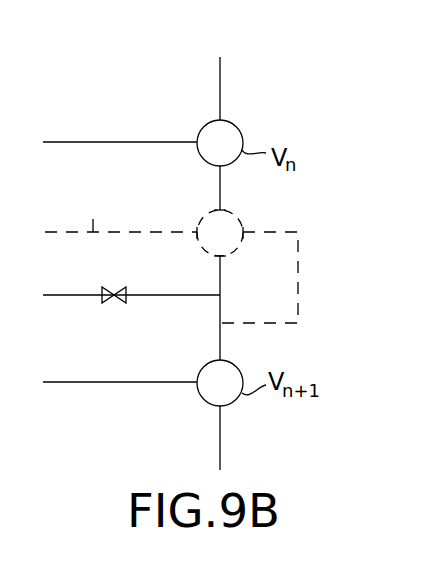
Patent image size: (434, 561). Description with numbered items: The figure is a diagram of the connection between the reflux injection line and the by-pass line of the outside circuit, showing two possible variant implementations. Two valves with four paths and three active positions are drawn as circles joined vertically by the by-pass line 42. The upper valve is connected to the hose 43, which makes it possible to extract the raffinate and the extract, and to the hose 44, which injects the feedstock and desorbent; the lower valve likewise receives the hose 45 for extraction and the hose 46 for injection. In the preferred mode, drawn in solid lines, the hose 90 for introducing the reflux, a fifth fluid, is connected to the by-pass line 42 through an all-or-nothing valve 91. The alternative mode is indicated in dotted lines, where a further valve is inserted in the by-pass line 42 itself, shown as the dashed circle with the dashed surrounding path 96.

The by-pass line 42 is at (220, 278).
The hose 43 is at (220, 87).
The hose 44 is at (67, 142).
The hose 45 is at (123, 382).
The hose 46 is at (220, 455).
The hose for introducing the reflux 90 is at (92, 211).
The all-or-nothing valve 91 is at (112, 289).
The virtual vertex (dashed circle) 96 is at (235, 212).